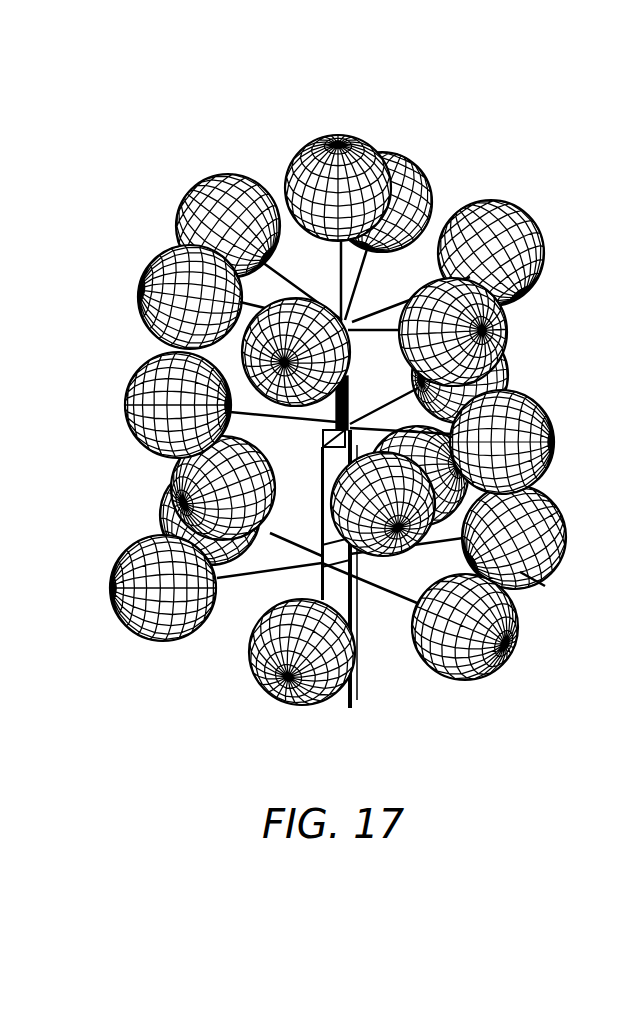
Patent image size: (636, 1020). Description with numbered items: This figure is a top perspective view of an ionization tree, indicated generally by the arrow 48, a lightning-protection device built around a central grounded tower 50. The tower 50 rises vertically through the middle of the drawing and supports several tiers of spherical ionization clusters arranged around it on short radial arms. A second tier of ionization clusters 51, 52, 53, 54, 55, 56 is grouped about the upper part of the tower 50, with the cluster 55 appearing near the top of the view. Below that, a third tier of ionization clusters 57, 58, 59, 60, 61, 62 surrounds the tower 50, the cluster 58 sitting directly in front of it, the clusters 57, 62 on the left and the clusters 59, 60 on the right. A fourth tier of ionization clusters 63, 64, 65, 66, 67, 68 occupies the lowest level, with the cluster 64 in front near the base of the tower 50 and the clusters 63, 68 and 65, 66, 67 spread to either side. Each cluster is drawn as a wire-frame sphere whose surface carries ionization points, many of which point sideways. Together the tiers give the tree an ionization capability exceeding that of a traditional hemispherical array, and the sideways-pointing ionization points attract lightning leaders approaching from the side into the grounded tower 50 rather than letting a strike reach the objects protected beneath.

The branched candle/ornament assembly 48 is at (262, 150).
The tower 50 is at (348, 708).
The ionization cluster 51 is at (147, 290).
The ionization cluster 52 is at (342, 366).
The ionization cluster 53 is at (503, 324).
The ionization cluster 54 is at (533, 232).
The ionization cluster 55 is at (425, 182).
The ionization cluster 56 is at (203, 184).
The ionization cluster 57 is at (172, 463).
The ionization cluster 58 is at (330, 472).
The ionization cluster 59 is at (556, 455).
The ionization cluster 60 is at (512, 376).
The ionization cluster 61 is at (291, 305).
The ionization cluster 62 is at (130, 386).
The ionization cluster 63 is at (133, 630).
The ionization cluster 64 is at (272, 695).
The ionization cluster 65 is at (483, 675).
The ionization cluster 66 is at (560, 537).
The ionization cluster 67 is at (533, 582).
The ionization cluster 68 is at (153, 512).